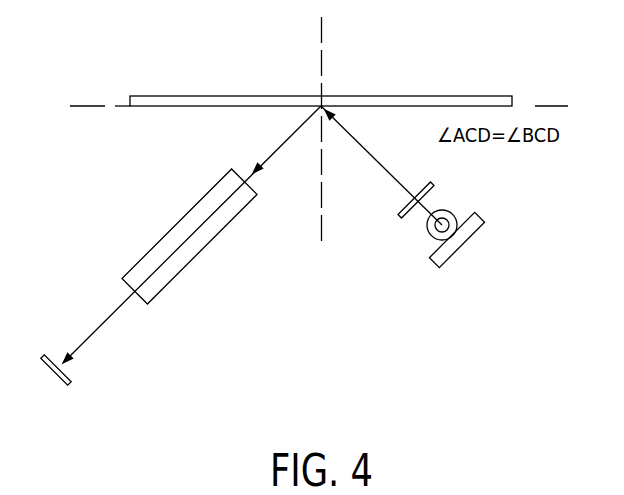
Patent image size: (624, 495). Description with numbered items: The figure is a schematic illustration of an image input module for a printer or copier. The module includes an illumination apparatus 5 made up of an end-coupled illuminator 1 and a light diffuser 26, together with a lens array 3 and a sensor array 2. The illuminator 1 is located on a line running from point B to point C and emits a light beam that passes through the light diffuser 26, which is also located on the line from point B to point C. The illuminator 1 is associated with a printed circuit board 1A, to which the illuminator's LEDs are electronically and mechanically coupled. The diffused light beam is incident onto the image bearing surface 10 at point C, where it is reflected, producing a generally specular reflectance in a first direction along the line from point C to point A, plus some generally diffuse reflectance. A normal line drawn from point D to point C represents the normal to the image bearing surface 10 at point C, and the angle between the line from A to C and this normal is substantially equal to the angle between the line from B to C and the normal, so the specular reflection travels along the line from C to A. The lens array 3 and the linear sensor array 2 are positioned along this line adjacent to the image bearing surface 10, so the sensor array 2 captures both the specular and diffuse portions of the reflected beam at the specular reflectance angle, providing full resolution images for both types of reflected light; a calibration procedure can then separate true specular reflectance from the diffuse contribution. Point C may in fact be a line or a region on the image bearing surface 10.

The image bearing surface 10 is at (443, 96).
The lens array 3 is at (154, 247).
The sensor array 2 is at (56, 385).
The light diffuser 26 is at (402, 214).
The end-coupled illuminator 1 is at (422, 246).
The printed circuit board 1A is at (437, 262).
The illumination apparatus 5 is at (542, 200).
The point A is at (57, 342).
The point B is at (462, 248).
The point C is at (320, 105).
The point D is at (321, 146).